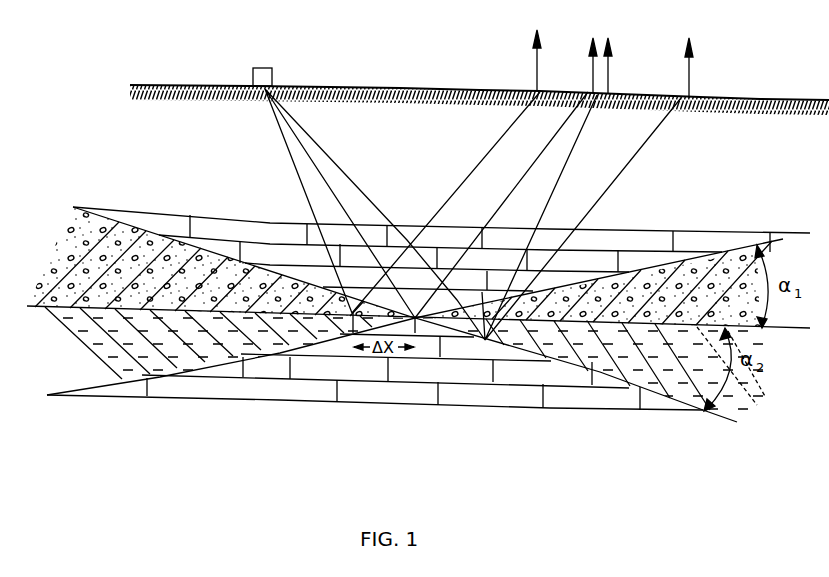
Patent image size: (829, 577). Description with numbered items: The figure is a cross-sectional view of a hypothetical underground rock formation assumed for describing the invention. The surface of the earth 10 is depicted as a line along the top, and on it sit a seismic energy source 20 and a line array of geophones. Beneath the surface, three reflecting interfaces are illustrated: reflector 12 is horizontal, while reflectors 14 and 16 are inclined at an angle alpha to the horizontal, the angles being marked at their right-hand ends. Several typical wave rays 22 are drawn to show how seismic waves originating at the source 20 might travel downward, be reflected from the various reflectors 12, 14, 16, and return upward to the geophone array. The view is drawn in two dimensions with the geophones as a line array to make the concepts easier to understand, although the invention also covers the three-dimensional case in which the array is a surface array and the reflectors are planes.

The surface of the earth 10 is at (167, 85).
The seismic energy source 20 is at (277, 67).
The wave rays 22 is at (541, 160).
The reflector 12 is at (415, 300).
The reflector 14 is at (133, 228).
The reflector 16 is at (103, 386).